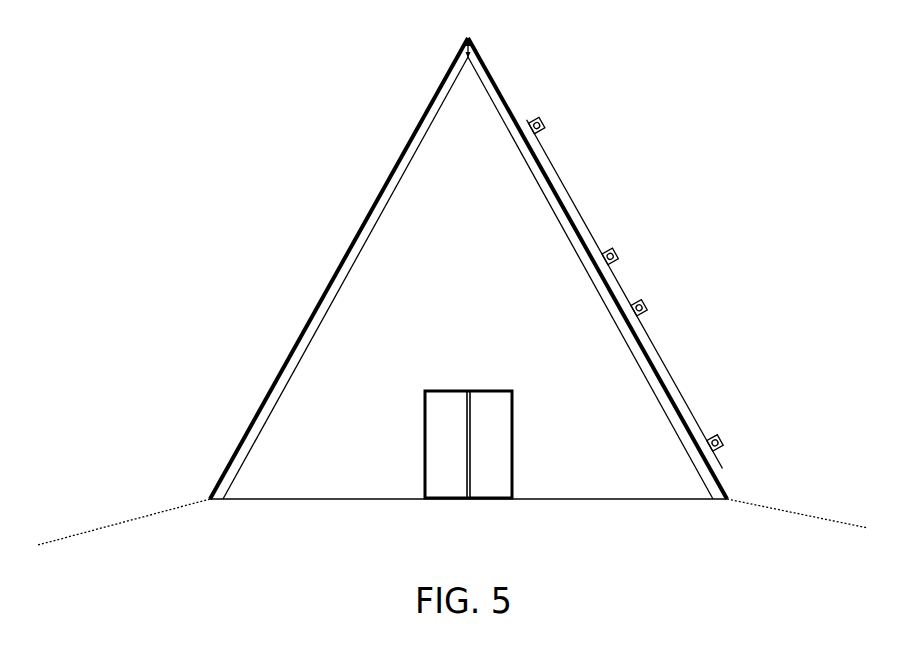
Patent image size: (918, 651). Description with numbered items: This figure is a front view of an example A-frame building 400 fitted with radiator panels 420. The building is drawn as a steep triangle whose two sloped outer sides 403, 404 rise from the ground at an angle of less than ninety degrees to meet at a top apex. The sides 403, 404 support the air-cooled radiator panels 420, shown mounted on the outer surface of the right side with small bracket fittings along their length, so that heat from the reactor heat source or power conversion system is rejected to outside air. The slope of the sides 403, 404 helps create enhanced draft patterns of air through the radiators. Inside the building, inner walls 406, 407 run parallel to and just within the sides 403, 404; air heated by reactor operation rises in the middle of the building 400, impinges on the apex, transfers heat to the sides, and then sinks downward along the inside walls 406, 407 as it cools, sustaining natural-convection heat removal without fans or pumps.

The A-frame building 400 is at (374, 192).
The side 403 is at (420, 122).
The side 404 is at (498, 88).
The inside wall 406 is at (356, 258).
The inside wall 407 is at (612, 315).
The radiator panels 420 is at (570, 159).